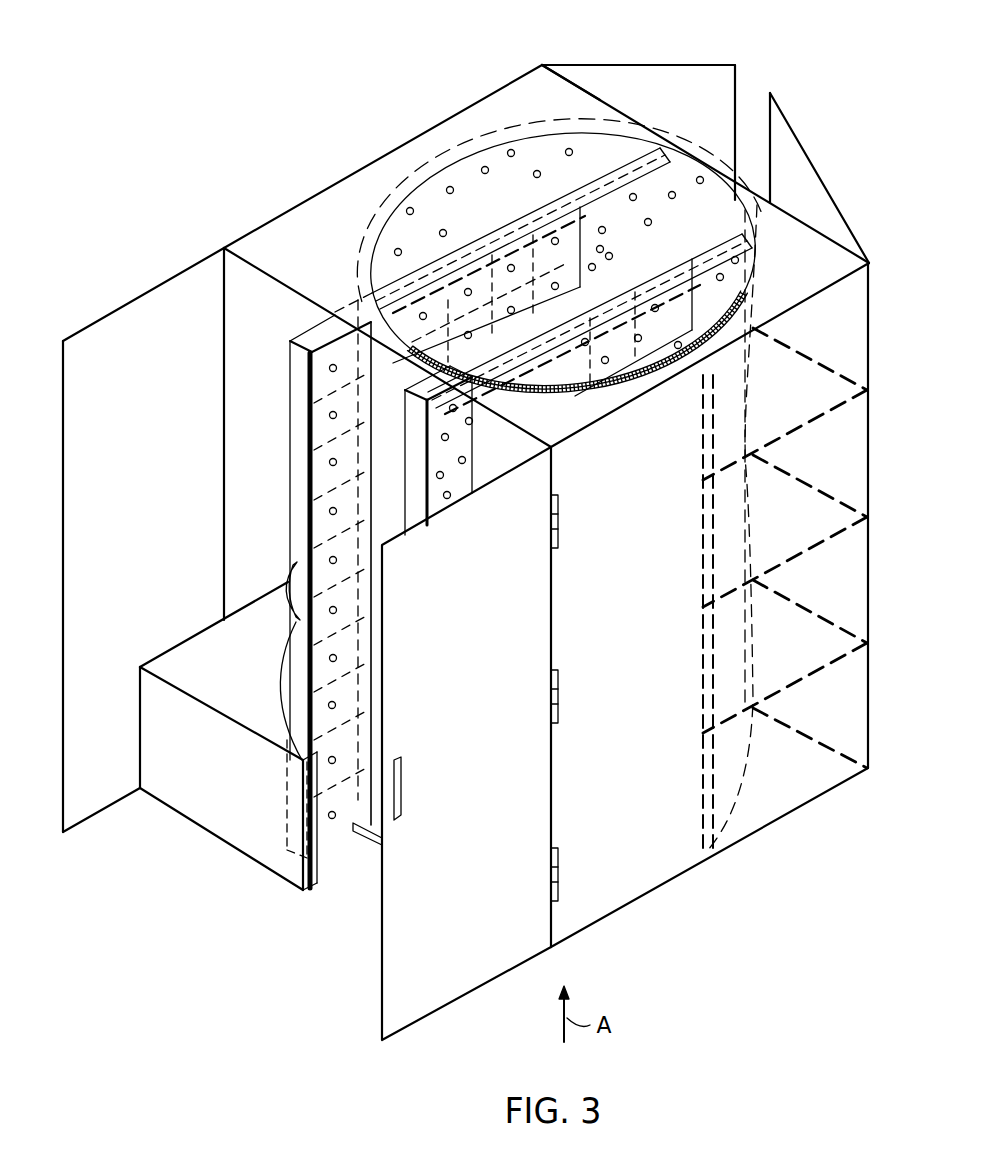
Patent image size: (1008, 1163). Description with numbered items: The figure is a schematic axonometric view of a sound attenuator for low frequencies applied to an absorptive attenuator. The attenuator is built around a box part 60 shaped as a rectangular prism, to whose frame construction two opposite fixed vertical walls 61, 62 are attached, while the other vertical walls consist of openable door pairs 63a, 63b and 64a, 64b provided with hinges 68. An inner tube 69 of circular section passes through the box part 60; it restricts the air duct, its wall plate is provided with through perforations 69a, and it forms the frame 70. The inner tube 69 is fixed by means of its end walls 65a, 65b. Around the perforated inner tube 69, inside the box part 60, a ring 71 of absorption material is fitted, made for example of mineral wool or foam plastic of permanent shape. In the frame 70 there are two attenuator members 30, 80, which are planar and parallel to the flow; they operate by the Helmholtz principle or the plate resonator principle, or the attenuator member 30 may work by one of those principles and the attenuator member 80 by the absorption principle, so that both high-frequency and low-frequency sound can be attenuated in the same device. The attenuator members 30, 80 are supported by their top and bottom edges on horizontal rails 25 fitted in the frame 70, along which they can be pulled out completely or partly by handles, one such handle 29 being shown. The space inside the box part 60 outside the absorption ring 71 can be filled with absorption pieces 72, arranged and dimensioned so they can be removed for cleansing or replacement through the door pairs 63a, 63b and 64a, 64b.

The horizontal rails 25 is at (660, 137).
The handle 29 is at (283, 590).
The attenuator member 30 is at (340, 357).
The box part 60 is at (827, 253).
The fixed vertical wall 61 is at (822, 727).
The fixed vertical wall 62 is at (284, 213).
The openable door 63a is at (485, 965).
The openable door 63b is at (113, 787).
The openable door 64a is at (688, 78).
The openable door 64b is at (815, 192).
The end wall 65a is at (373, 845).
The end wall 65b is at (557, 98).
The hinges 68 is at (558, 535).
The inner tube 69 is at (436, 169).
The through perforations 69a is at (511, 158).
The frame 70 is at (498, 130).
The ring of absorption material 71 is at (665, 390).
The absorption pieces 72 is at (260, 838).
The attenuator member 80 is at (460, 492).